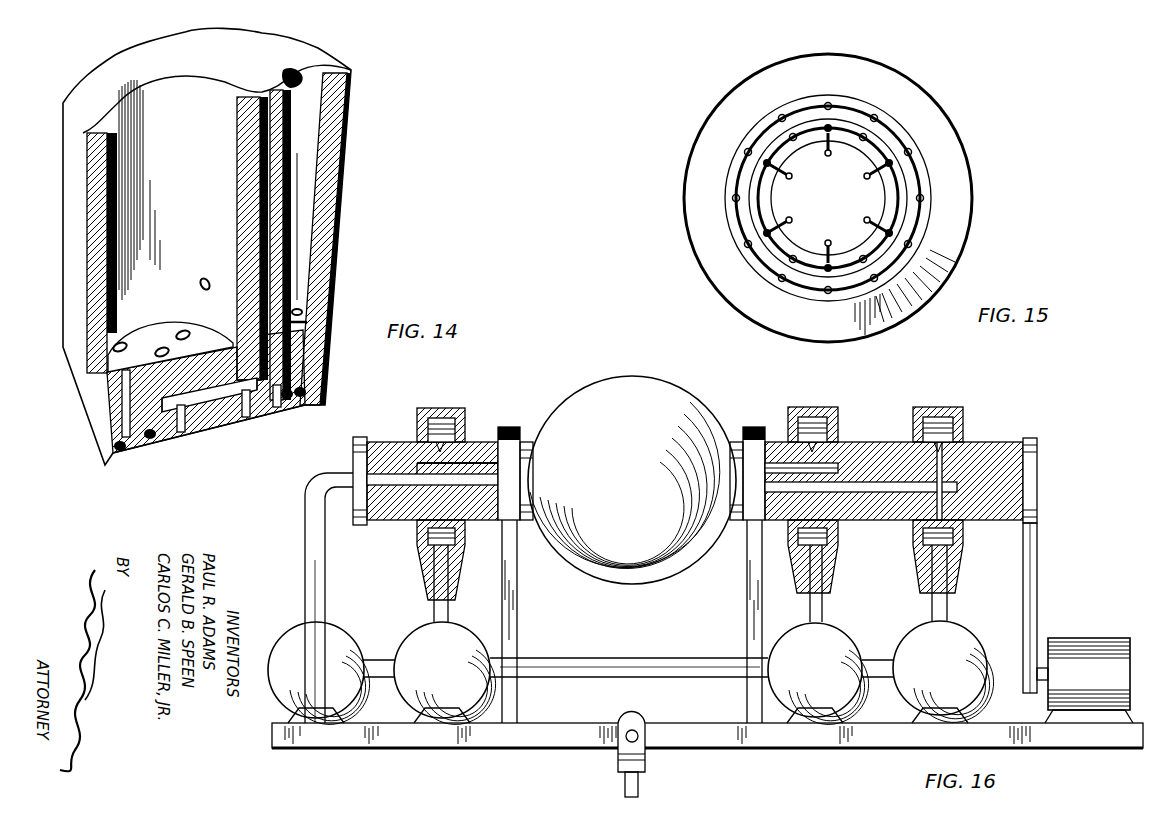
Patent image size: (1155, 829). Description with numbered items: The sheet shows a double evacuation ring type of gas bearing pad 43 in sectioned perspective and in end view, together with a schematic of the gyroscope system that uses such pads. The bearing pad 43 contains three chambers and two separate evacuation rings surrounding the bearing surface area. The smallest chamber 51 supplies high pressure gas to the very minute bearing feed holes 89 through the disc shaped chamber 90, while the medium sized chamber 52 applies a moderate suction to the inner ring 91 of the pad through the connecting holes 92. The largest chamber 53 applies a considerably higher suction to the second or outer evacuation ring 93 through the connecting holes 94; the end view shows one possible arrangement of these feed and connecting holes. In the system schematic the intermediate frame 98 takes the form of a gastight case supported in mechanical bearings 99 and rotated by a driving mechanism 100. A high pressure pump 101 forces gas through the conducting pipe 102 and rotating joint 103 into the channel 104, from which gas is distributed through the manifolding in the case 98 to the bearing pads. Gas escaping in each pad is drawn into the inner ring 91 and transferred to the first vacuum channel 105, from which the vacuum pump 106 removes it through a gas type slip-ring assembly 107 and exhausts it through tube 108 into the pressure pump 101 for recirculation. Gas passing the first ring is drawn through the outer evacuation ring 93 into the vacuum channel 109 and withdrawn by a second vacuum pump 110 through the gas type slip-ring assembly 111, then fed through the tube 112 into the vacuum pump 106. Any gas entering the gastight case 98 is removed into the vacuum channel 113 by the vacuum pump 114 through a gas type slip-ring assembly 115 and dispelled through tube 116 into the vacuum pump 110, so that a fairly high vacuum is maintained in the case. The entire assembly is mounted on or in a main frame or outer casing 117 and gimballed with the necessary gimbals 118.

In FIG. 14, the bearing pad 43 is at (355, 128).
In FIG. 15, the bearing pad 43 is at (962, 118).
In FIG. 14, the smallest chamber 51 is at (245, 194).
In FIG. 14, the medium sized chamber 52 is at (300, 222).
In FIG. 14, the largest chamber 53 is at (212, 172).
In FIG. 14, the bearing feed holes 89 is at (181, 432).
In FIG. 15, the bearing feed holes 89 is at (850, 178).
In FIG. 14, the disc shaped chamber 90 is at (202, 412).
In FIG. 14, the inner ring 91 is at (150, 440).
In FIG. 15, the inner ring 91 is at (920, 205).
In FIG. 14, the connecting holes 92 is at (302, 310).
In FIG. 15, the connecting holes 92 is at (828, 133).
In FIG. 14, the outer evacuation ring 93 is at (120, 452).
In FIG. 15, the outer evacuation ring 93 is at (905, 228).
In FIG. 14, the connecting holes 94 is at (205, 280).
In FIG. 15, the connecting holes 94 is at (874, 118).
In FIG. 16, the intermediate frame 98 is at (630, 480).
In FIG. 16, the mechanical bearings 99 is at (508, 427).
In FIG. 16, the driving mechanism 100 is at (1102, 680).
In FIG. 16, the high pressure pump 101 is at (326, 660).
In FIG. 16, the conducting pipe 102 is at (305, 560).
In FIG. 16, the rotating joint 103 is at (361, 437).
In FIG. 16, the channel 104 is at (393, 520).
In FIG. 16, the first vacuum channel 105 is at (483, 442).
In FIG. 16, the vacuum pump 106 is at (451, 660).
In FIG. 16, the gas type slip-ring assembly 107 is at (440, 408).
In FIG. 16, the tube 108 is at (380, 660).
In FIG. 16, the vacuum channel 109 is at (830, 442).
In FIG. 16, the second vacuum pump 110 is at (824, 660).
In FIG. 16, the gas type slip-ring assembly 111 is at (810, 407).
In FIG. 16, the tube 112 is at (652, 658).
In FIG. 16, the vacuum channel 113 is at (890, 500).
In FIG. 16, the vacuum pump 114 is at (949, 658).
In FIG. 16, the gas type slip-ring assembly 115 is at (938, 407).
In FIG. 16, the tube 116 is at (878, 660).
In FIG. 16, the main frame 117 is at (822, 748).
In FIG. 16, the gimbals 118 is at (645, 762).